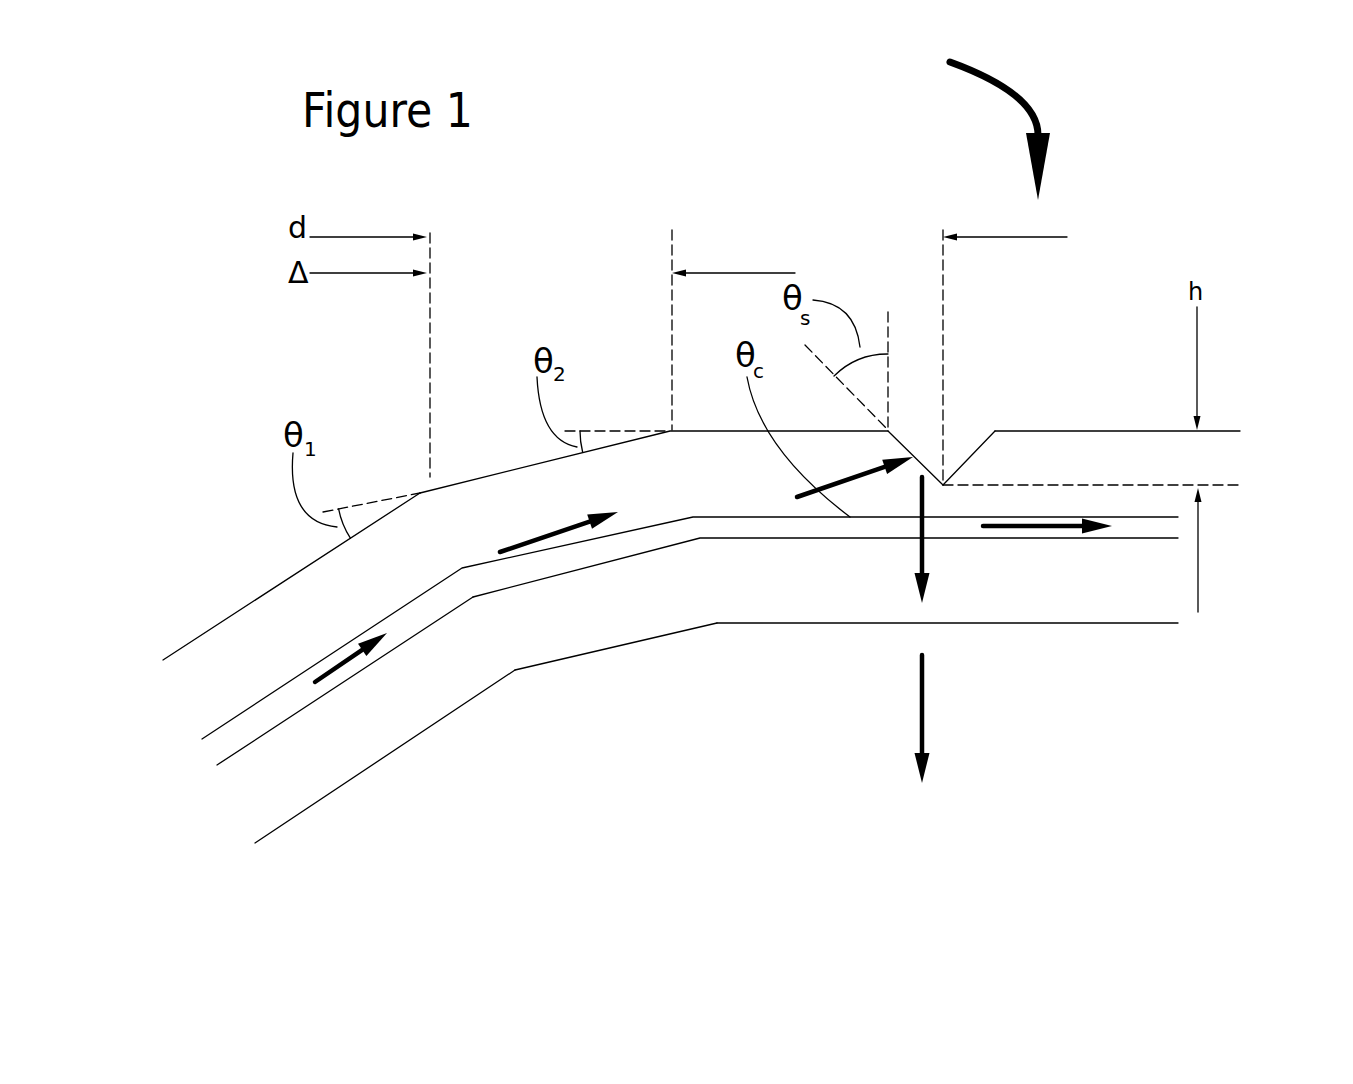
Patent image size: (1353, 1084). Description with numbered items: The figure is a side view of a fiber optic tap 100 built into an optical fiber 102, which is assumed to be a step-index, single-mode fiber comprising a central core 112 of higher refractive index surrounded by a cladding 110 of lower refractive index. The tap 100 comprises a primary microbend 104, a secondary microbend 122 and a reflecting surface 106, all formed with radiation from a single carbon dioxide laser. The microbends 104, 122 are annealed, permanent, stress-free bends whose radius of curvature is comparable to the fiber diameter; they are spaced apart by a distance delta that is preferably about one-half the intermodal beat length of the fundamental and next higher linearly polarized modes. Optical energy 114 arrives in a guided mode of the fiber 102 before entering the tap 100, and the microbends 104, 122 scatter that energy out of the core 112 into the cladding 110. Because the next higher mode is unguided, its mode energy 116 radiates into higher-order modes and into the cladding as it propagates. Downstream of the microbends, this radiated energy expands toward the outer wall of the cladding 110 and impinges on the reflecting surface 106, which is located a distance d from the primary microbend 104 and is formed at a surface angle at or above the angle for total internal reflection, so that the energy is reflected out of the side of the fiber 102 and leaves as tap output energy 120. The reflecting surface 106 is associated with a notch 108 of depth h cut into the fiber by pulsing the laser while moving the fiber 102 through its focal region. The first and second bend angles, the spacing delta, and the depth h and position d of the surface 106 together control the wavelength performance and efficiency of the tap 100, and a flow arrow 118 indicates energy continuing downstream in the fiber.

The optical fiber tap 100 is at (955, 122).
The optical fiber 102 is at (300, 558).
The primary microbend 104 is at (513, 670).
The reflecting surface 106 is at (908, 448).
The notch 108 is at (943, 465).
The cladding 110 is at (462, 517).
The central core 112 is at (228, 762).
The optical energy 114 is at (328, 680).
The LP11 mode energy 116 is at (560, 540).
The downstream flow direction 118 is at (1023, 526).
The tap output energy 120 is at (915, 697).
The secondary microbend 122 is at (715, 627).